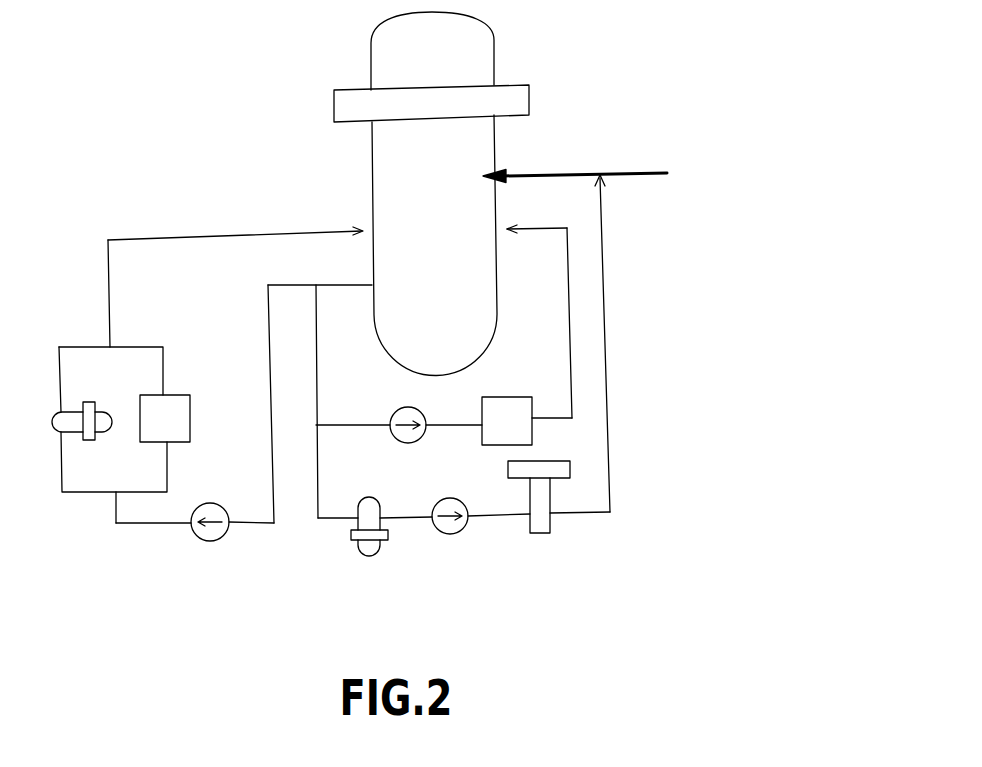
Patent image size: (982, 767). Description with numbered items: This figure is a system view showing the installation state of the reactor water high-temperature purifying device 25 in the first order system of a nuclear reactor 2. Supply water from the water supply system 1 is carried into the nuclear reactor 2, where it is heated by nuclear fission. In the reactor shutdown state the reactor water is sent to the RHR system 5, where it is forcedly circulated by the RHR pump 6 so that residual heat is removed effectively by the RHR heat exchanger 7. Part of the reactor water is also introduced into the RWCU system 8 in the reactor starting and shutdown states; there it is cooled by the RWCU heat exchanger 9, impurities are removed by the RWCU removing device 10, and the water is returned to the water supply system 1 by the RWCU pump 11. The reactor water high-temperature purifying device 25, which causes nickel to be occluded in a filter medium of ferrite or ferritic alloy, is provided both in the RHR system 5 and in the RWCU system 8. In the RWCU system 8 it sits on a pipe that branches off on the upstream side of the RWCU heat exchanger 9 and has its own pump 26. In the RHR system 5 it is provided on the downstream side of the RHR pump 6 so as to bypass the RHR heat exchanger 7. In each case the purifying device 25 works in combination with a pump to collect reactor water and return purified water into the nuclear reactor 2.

The water supply system 1 is at (563, 173).
The nuclear reactor 2 is at (442, 203).
The RHR system 5 is at (95, 512).
The RHR pump 6 is at (210, 541).
The RHR heat exchanger 7 is at (53, 421).
The RWCU system 8 is at (626, 372).
The RWCU heat exchanger 9 is at (371, 556).
The RWCU removing device 10 is at (544, 534).
The RWCU pump 11 is at (452, 535).
The reactor water high-temperature purifying device 25 is at (178, 395).
The pump 26 is at (401, 409).